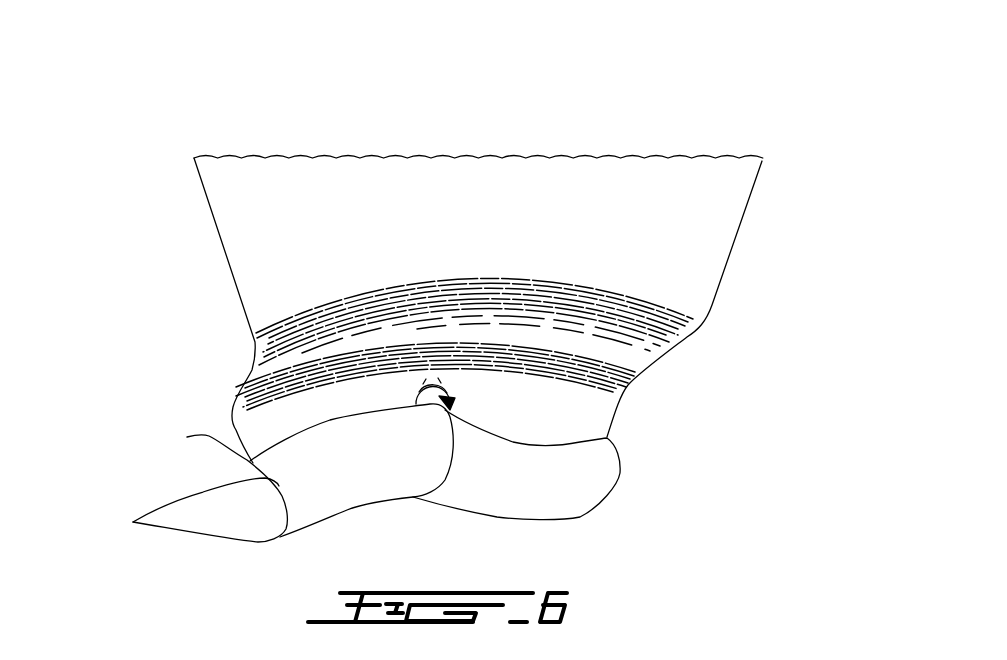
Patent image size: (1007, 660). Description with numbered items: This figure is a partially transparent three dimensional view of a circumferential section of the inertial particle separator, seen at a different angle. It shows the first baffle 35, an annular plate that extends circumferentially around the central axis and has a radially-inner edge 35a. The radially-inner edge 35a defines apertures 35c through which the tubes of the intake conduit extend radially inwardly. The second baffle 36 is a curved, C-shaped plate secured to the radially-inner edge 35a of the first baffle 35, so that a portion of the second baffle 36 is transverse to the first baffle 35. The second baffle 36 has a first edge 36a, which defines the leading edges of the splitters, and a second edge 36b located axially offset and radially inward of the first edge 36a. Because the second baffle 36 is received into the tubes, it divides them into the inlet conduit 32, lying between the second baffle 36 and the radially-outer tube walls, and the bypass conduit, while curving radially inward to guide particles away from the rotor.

The first baffle 35 is at (708, 215).
The radially-inner edge 35a is at (290, 440).
The apertures 35c is at (415, 380).
The inlet conduit 32 is at (456, 405).
The second baffle 36 is at (218, 542).
The first edge 36a is at (187, 437).
The second edge 36b is at (160, 507).